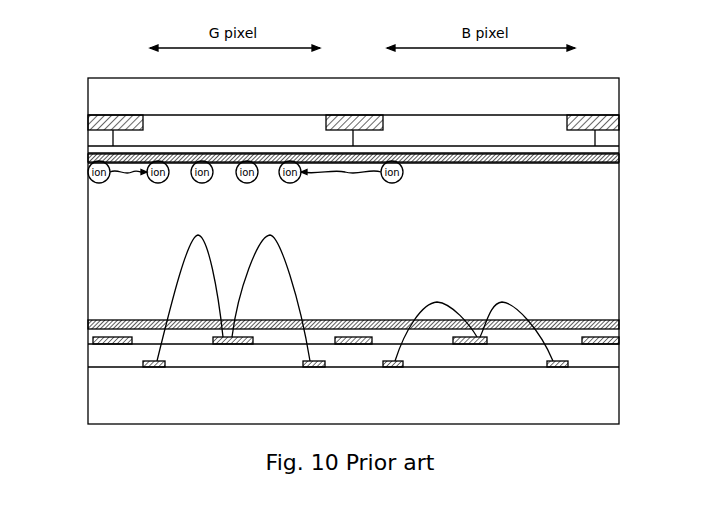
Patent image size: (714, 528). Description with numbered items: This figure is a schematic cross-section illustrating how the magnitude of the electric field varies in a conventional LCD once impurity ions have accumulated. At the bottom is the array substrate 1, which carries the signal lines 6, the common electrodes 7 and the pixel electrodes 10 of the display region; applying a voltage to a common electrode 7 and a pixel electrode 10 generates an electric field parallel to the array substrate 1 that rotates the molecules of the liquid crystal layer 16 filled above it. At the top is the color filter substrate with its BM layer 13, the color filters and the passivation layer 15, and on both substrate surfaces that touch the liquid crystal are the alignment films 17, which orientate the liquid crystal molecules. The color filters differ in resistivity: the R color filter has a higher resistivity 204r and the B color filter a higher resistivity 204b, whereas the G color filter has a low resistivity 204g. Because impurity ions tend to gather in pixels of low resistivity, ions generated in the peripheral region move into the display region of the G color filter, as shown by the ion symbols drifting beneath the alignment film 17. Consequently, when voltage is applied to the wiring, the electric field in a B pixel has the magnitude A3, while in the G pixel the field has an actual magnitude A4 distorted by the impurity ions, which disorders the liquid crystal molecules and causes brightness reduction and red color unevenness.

The array substrate 1 is at (619, 390).
The signal line 6 is at (112, 345).
The common electrode 7 is at (153, 368).
The pixel electrode 10 is at (230, 345).
The BM (black matrix) layer 13 is at (140, 115).
The passivation layer 15 is at (619, 150).
The liquid crystal layer 16 is at (619, 233).
The alignment film 17 is at (619, 162).
The R color filter resistivity 204r is at (88, 141).
The G color filter resistivity 204g is at (186, 120).
The B color filter resistivity 204b is at (428, 120).
The electric field magnitude in B pixel A3 is at (437, 302).
The actual electric field magnitude in G pixel A4 is at (198, 235).